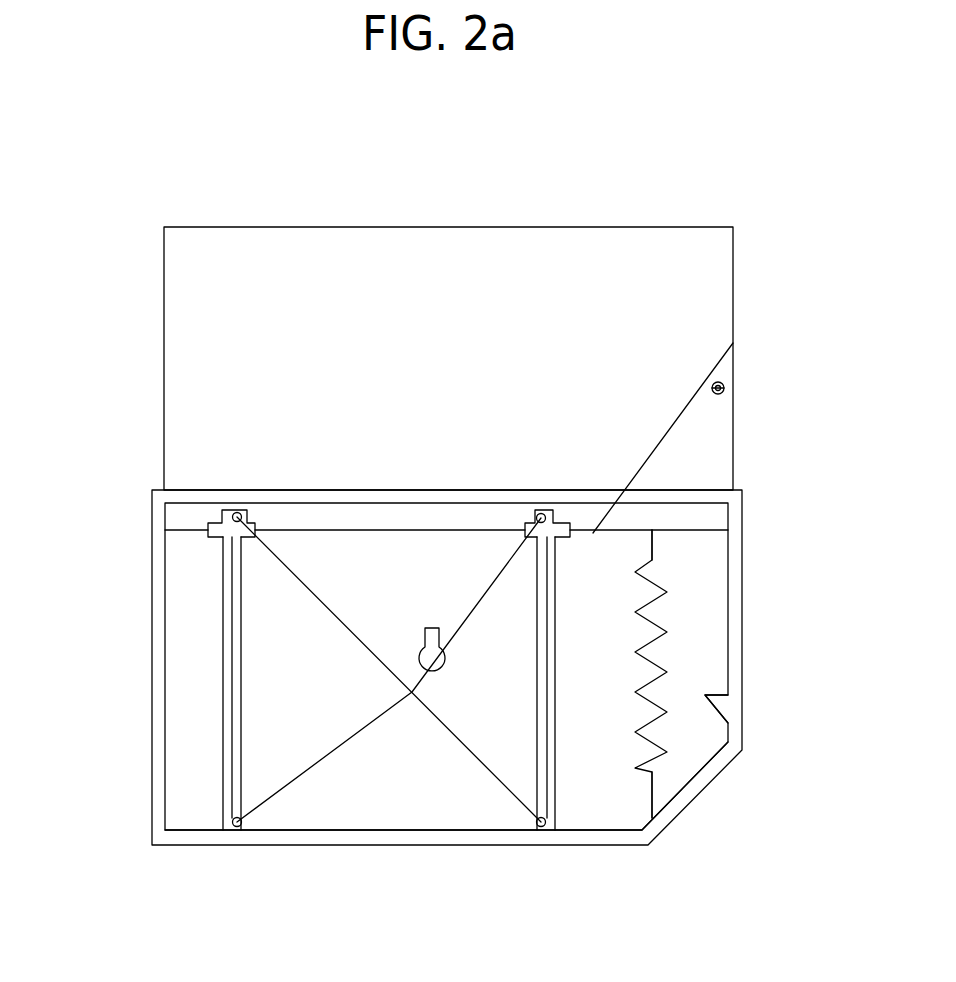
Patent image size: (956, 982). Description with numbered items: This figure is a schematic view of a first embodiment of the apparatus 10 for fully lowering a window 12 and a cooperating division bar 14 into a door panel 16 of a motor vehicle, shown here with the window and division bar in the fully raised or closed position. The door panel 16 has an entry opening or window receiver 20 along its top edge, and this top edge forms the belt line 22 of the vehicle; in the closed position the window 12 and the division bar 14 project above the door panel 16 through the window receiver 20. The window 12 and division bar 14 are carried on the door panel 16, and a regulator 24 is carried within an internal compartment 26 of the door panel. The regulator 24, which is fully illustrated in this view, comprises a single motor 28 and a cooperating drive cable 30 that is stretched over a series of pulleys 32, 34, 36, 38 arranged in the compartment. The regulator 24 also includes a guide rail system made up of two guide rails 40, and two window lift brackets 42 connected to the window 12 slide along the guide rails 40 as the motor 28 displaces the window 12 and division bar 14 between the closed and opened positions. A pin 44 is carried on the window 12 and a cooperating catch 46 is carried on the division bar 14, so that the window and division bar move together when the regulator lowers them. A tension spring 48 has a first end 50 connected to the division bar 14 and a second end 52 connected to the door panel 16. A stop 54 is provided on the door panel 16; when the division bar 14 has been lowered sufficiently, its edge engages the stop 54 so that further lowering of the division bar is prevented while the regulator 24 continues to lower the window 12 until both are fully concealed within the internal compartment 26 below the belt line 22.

The apparatus 10 is at (671, 192).
The window 12 is at (200, 372).
The division bar 14 is at (700, 435).
The door panel 16 is at (152, 725).
The window receiver 20 is at (422, 490).
The belt line 22 is at (379, 470).
The regulator 24 is at (204, 777).
The internal compartment 26 is at (630, 838).
The motor 28 is at (420, 650).
The drive cable 30 is at (424, 728).
The pulley 32 is at (242, 513).
The pulley 34 is at (538, 528).
The pulley 36 is at (237, 827).
The pulley 38 is at (543, 827).
The guide rail 40 is at (246, 666).
The window lift bracket 42 is at (216, 540).
The pin 44 is at (723, 394).
The catch 46 is at (713, 381).
The tension spring 48 is at (656, 656).
The first end 50 is at (657, 540).
The second end 52 is at (653, 805).
The stop 54 is at (720, 690).